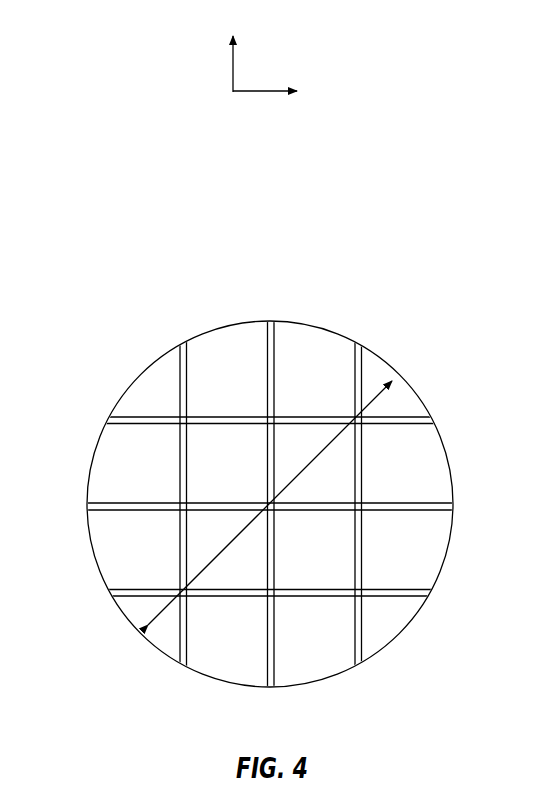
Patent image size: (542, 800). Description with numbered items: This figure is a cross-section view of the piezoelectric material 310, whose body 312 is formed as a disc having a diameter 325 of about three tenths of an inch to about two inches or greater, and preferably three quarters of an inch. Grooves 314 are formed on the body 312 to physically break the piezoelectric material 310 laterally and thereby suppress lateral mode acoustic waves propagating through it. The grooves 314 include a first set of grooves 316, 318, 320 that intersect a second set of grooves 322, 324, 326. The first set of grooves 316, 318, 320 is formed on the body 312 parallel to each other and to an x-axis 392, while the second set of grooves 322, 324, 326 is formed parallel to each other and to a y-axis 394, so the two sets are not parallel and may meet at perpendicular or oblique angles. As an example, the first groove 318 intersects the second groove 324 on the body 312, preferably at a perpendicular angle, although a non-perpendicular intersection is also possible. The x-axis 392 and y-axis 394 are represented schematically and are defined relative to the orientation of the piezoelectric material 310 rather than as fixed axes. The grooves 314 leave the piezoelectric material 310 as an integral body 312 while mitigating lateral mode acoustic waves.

The piezoelectric material 310 is at (117, 228).
The body 312 is at (388, 614).
The grooves 314 is at (110, 332).
The first set of grooves 316 is at (133, 418).
The first groove 318 is at (90, 505).
The first set of grooves 320 is at (113, 592).
The second set of grooves 322 is at (178, 368).
The second groove 324 is at (265, 343).
The second set of grooves 326 is at (353, 357).
The diameter 325 is at (392, 368).
The x-axis 392 is at (267, 93).
The y-axis 394 is at (232, 73).